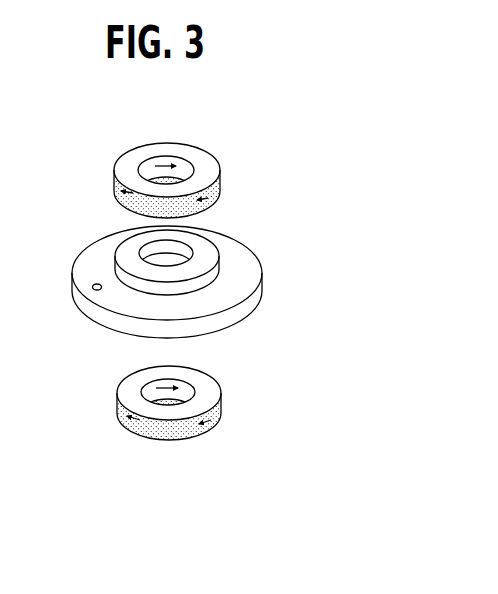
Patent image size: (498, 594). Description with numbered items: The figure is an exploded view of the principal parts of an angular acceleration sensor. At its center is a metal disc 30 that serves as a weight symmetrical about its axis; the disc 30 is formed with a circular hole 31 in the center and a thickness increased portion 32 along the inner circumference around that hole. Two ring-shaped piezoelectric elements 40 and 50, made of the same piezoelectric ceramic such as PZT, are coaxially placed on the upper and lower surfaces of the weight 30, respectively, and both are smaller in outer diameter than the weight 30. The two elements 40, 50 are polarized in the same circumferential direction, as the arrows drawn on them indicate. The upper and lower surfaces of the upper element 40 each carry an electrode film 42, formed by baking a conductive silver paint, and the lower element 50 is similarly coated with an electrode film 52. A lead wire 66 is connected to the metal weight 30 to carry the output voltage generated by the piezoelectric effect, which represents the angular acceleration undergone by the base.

The metal disc 30 is at (162, 273).
The circular hole 31 is at (155, 250).
The thickness increased portion 32 is at (220, 271).
The piezoelectric element 40 is at (193, 165).
The electrode film 42 is at (205, 160).
The piezoelectric element 50 is at (144, 419).
The electrode film 52 is at (127, 387).
The lead wire 66 is at (93, 286).